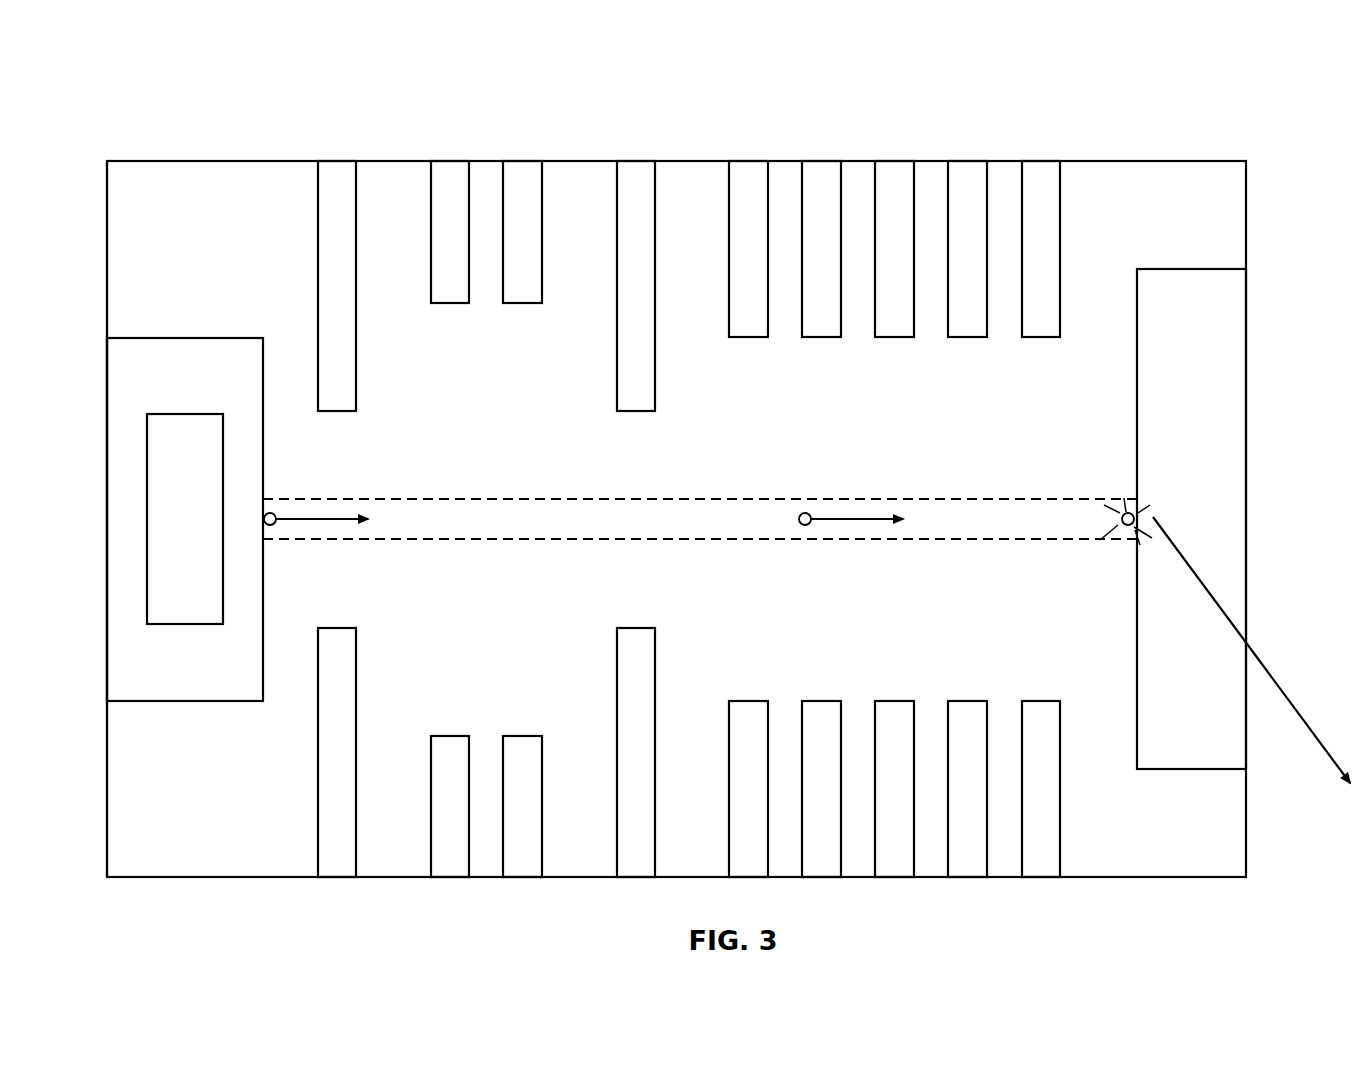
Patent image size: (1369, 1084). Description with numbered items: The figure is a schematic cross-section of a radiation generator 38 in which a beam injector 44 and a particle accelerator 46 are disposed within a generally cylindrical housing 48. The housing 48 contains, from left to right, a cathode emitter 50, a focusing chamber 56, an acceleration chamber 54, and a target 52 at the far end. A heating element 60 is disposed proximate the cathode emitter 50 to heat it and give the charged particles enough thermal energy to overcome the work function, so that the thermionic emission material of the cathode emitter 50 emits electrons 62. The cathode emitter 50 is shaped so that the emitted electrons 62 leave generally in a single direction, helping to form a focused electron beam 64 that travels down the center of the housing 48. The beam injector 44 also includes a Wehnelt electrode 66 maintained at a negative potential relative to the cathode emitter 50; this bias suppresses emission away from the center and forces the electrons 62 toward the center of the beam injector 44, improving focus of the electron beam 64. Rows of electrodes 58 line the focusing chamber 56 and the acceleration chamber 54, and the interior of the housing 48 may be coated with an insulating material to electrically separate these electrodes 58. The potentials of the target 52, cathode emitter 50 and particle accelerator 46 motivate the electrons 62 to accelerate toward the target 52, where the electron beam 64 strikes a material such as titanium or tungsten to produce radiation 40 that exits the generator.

The radiation generator 38 is at (124, 79).
The radiation 40 is at (1303, 718).
The beam injector 44 is at (297, 154).
The particle accelerator 46 is at (935, 154).
The housing 48 is at (106, 214).
The cathode emitter 50 is at (128, 364).
The target 52 is at (1230, 410).
The acceleration chamber 54 is at (933, 400).
The focusing chamber 56 is at (481, 400).
The electrodes 58 is at (542, 225).
The heating element 60 is at (170, 514).
The electrons 62 is at (273, 513).
The electron beam 64 is at (483, 543).
The Wehnelt electrode 66 is at (318, 221).